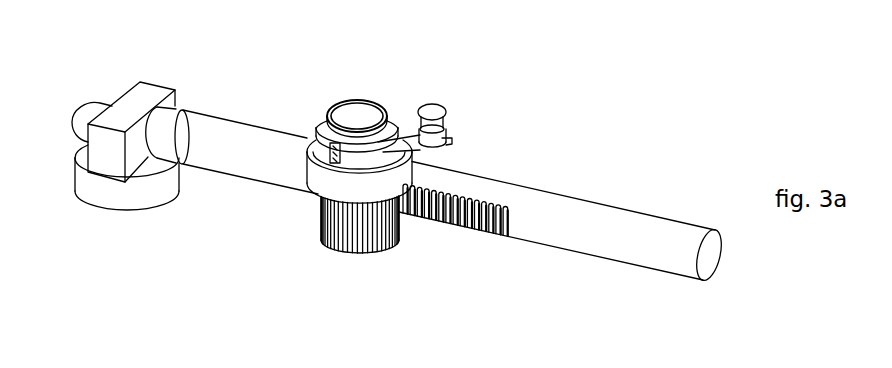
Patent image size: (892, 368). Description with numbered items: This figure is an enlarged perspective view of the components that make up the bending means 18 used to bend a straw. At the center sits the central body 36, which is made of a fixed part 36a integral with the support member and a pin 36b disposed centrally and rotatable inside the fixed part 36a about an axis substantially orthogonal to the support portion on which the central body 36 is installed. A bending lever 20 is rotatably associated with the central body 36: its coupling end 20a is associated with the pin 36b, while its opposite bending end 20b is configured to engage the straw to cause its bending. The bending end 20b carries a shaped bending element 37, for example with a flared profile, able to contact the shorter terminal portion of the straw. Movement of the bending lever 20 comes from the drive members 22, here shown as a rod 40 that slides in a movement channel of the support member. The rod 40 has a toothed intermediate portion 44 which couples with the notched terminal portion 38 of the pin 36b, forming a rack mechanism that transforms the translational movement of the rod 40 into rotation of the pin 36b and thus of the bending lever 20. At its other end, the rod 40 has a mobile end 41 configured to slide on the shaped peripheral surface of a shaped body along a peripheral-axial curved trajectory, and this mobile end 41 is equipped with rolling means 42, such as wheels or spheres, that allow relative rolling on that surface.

The bending means 18 is at (300, 82).
The bending lever 20 is at (408, 110).
The coupling end 20a is at (373, 155).
The bending end 20b is at (420, 150).
The drive members 22 is at (190, 80).
The central body 36 is at (300, 118).
The fixed part 36a is at (343, 188).
The pin 36b is at (358, 112).
The shaped bending element 37 is at (443, 131).
The notched terminal portion 38 is at (370, 232).
The rod 40 is at (578, 217).
The mobile end 41 is at (89, 108).
The rolling means 42 is at (135, 195).
The toothed intermediate portion 44 is at (474, 232).